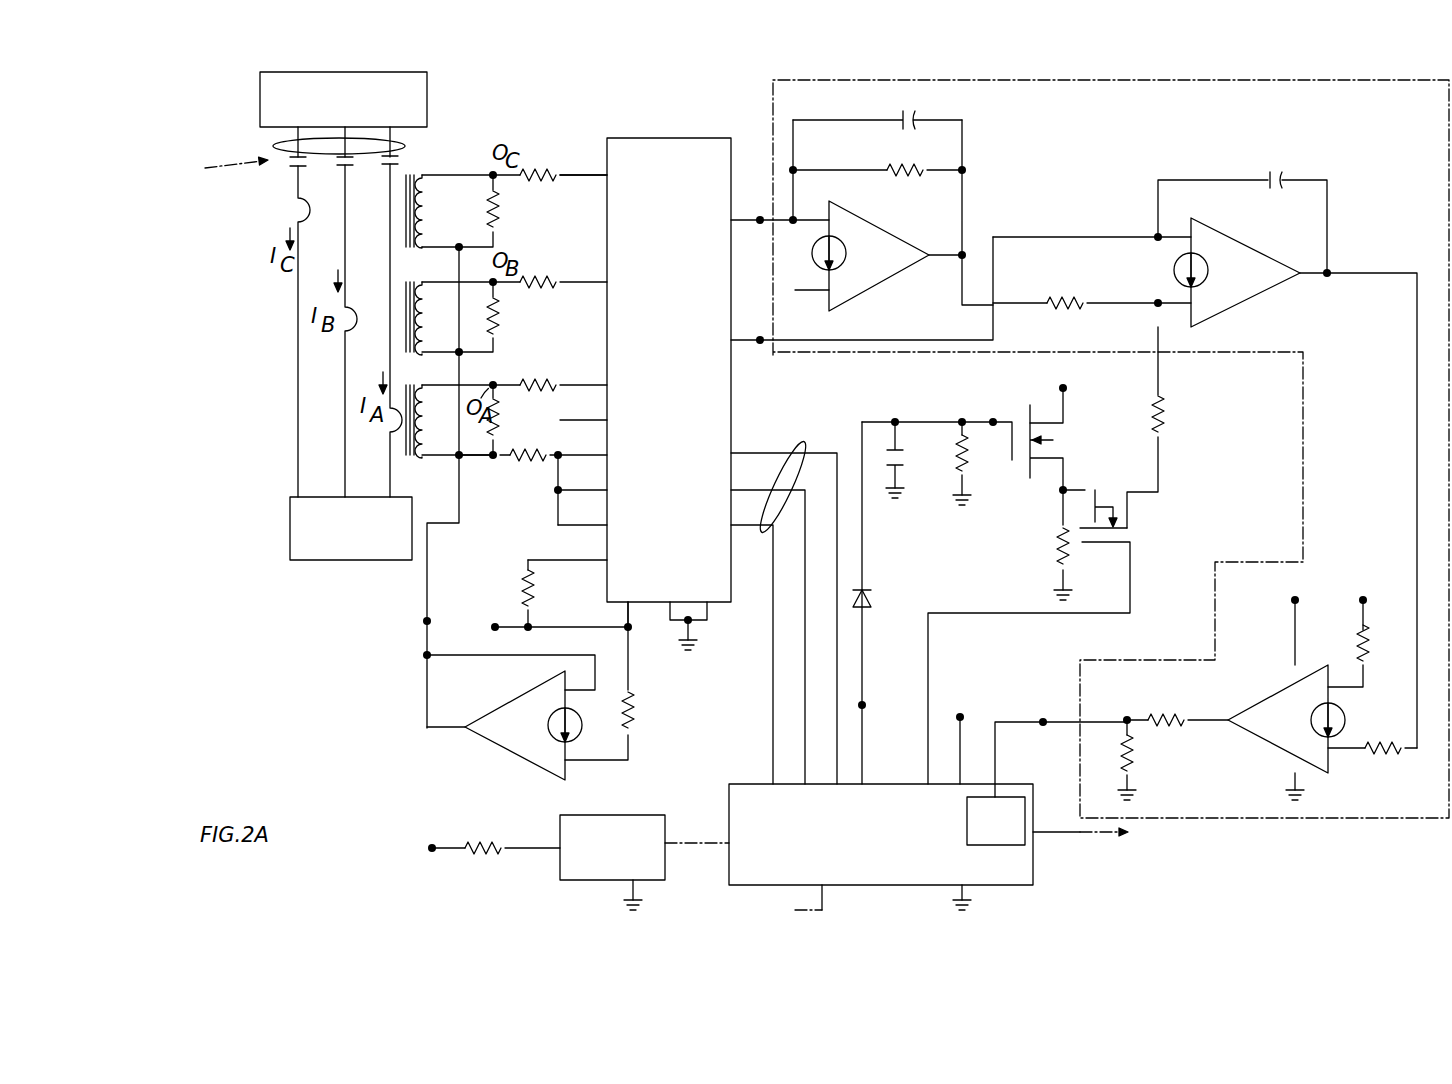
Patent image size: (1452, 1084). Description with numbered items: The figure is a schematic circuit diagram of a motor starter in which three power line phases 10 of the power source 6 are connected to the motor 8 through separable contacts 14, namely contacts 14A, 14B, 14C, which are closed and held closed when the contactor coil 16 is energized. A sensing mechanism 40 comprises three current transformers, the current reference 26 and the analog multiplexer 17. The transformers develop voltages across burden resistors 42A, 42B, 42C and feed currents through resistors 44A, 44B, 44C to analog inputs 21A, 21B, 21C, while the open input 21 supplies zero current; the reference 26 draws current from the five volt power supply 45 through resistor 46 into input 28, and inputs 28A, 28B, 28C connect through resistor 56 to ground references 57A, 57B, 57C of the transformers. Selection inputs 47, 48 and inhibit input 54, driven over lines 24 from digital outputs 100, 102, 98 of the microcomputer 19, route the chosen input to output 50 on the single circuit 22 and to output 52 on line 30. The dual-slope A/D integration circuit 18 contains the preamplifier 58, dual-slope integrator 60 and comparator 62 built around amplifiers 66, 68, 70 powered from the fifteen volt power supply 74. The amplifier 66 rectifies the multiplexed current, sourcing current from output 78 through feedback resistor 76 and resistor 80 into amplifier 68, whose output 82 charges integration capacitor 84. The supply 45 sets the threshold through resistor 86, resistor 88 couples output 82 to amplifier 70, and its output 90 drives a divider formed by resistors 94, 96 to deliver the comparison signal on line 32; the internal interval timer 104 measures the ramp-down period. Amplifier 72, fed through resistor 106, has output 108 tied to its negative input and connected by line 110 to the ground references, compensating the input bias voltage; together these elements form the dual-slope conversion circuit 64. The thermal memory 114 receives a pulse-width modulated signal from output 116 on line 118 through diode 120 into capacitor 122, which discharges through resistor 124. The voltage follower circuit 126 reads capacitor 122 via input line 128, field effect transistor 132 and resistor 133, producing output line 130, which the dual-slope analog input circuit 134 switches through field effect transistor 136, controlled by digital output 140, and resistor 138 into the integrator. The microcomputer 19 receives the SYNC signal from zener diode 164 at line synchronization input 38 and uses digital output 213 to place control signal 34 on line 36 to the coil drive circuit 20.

The power source 6 is at (427, 85).
The motor 8 is at (290, 531).
The power line phases 10 is at (273, 148).
The separable contacts 14 is at (293, 209).
The separable contact 14A is at (390, 164).
The separable contact 14B is at (346, 166).
The separable contact 14C is at (300, 168).
The contactor coil 16 is at (225, 169).
The analog multiplexer 17 is at (668, 138).
The dual-slope A/D integration circuit 18 is at (1445, 190).
The microcomputer 19 is at (890, 853).
The coil drive circuit 20 is at (1138, 833).
The open analog input 21 is at (602, 417).
The analog input 21A is at (602, 382).
The analog input 21B is at (602, 279).
The analog input 21C is at (602, 172).
The single circuit 22 is at (765, 196).
The lines 24 is at (805, 425).
The current reference 26 is at (548, 663).
The analog input 28 is at (604, 558).
The analog input 28A is at (604, 523).
The analog input 28B is at (604, 488).
The analog input 28C is at (604, 453).
The line 30 is at (760, 337).
The line 32 is at (1030, 713).
The control signal 34 is at (1065, 838).
The line 36 is at (1100, 838).
The line synchronization digital input 38 is at (825, 900).
The sensing mechanism 40 is at (545, 130).
The burden resistor 42A is at (500, 418).
The burden resistor 42B is at (500, 315).
The burden resistor 42C is at (485, 200).
The resistor 44A is at (515, 378).
The resistor 44B is at (548, 290).
The resistor 44C is at (548, 183).
The +5 power supply 45 is at (965, 740).
The resistor 46 is at (533, 605).
The selection input 47 is at (740, 448).
The selection input 48 is at (740, 485).
The output 50 is at (753, 231).
The output 52 is at (738, 347).
The inhibit input 54 is at (735, 535).
The resistor 56 is at (540, 462).
The ground reference 57A is at (457, 459).
The ground reference 57B is at (457, 356).
The ground reference 57C is at (457, 251).
The preamplifier 58 is at (891, 223).
The dual-slope integrator 60 is at (1246, 244).
The comparator 62 is at (1267, 689).
The dual-slope conversion circuit 64 is at (1225, 862).
The amplifier 66 is at (870, 228).
The amplifier 68 is at (1232, 242).
The amplifier 70 is at (1295, 685).
The amplifier 72 is at (515, 758).
The +15 power supply 74 is at (1065, 405).
The feedback resistor 76 is at (897, 167).
The output 78 is at (938, 252).
The resistor 80 is at (1065, 290).
The output 82 is at (1290, 268).
The integration capacitor 84 is at (1265, 180).
The resistor 86 is at (1368, 648).
The resistor 88 is at (1385, 760).
The output 90 is at (1228, 720).
The resistor 94 is at (1135, 748).
The resistor 96 is at (1165, 708).
The digital output 98 is at (773, 790).
The digital output 100 is at (837, 790).
The digital output 102 is at (805, 790).
The internal interval timer 104 is at (985, 845).
The resistor 106 is at (633, 735).
The output 108 is at (458, 728).
The line 110 is at (398, 625).
The thermal memory 114 is at (938, 520).
The output 116 is at (862, 790).
The line 118 is at (868, 705).
The diode 120 is at (872, 600).
The thermal memory capacitor 122 is at (903, 447).
The resistor 124 is at (972, 450).
The voltage follower circuit 126 is at (1175, 502).
The input line 128 is at (992, 420).
The output line 130 is at (1070, 485).
The field effect transistor 132 is at (1030, 465).
The resistor 133 is at (1070, 545).
The dual-slope analog input circuit 134 is at (1102, 555).
The field effect transistor 136 is at (1133, 530).
The resistor 138 is at (1165, 420).
The digital output 140 is at (928, 790).
The zener diode 164 is at (597, 875).
The digital output 213 is at (1037, 832).